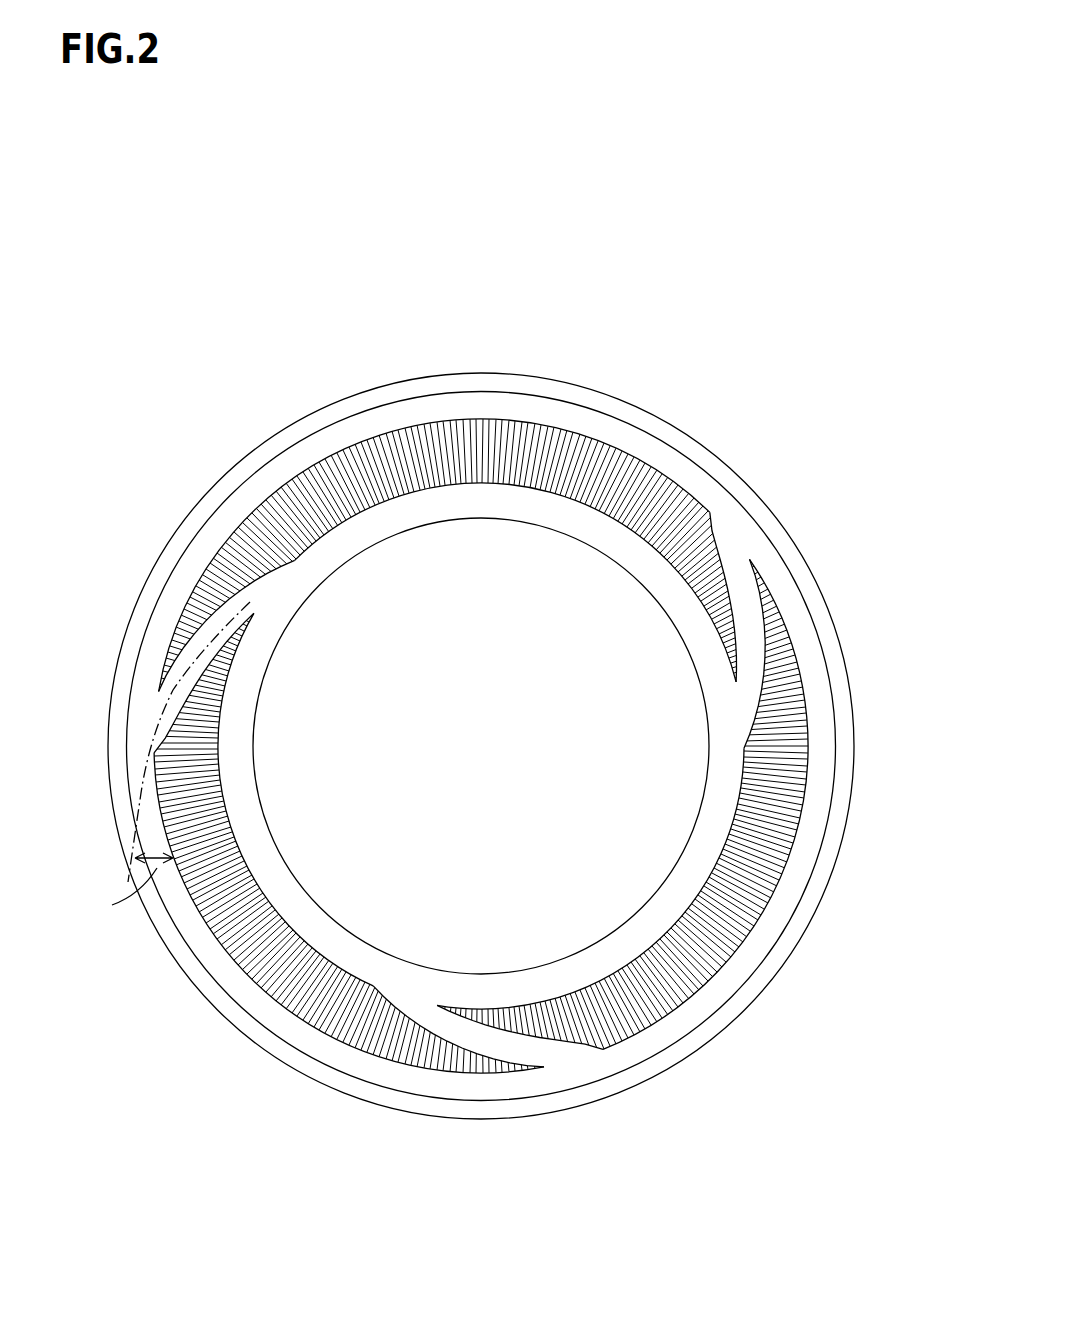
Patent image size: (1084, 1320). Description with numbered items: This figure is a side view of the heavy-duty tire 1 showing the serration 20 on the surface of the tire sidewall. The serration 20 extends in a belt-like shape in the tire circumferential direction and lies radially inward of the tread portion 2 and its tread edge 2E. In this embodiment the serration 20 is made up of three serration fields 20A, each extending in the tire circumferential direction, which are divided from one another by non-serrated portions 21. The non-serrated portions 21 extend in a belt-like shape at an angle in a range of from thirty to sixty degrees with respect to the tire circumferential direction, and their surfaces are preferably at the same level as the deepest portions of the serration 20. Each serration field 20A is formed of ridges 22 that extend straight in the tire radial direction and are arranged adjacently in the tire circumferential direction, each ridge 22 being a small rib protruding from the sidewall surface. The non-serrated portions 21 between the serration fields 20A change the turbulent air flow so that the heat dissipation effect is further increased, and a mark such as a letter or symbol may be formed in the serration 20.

The heavy-duty tire 1 is at (693, 352).
The tread portion 2 is at (322, 408).
The tread edge 2E is at (390, 402).
The serration 20 is at (488, 418).
The serration fields 20A is at (540, 455).
The non-serrated portions 21 is at (750, 633).
The ridges 22 is at (735, 900).